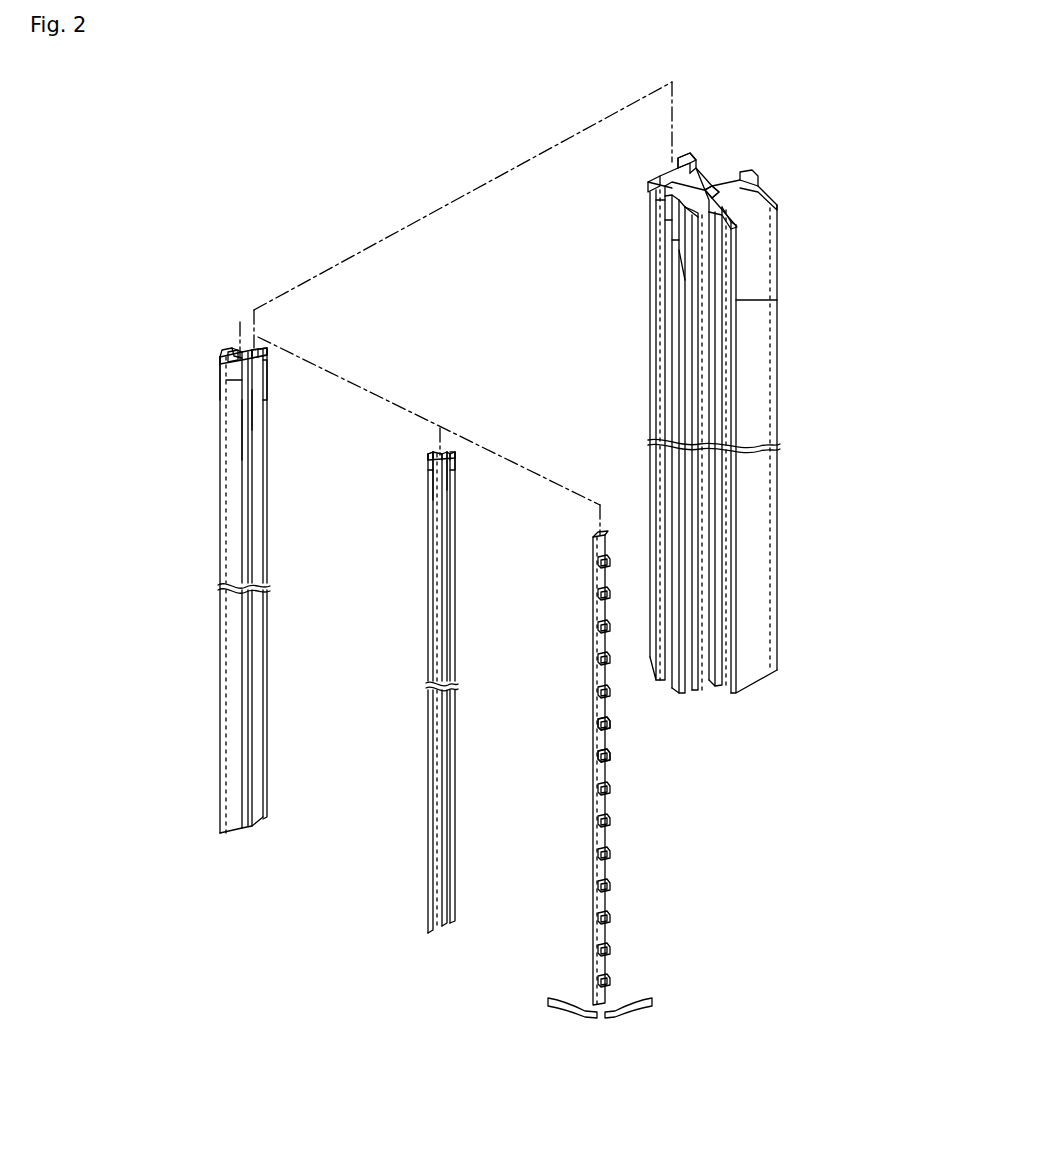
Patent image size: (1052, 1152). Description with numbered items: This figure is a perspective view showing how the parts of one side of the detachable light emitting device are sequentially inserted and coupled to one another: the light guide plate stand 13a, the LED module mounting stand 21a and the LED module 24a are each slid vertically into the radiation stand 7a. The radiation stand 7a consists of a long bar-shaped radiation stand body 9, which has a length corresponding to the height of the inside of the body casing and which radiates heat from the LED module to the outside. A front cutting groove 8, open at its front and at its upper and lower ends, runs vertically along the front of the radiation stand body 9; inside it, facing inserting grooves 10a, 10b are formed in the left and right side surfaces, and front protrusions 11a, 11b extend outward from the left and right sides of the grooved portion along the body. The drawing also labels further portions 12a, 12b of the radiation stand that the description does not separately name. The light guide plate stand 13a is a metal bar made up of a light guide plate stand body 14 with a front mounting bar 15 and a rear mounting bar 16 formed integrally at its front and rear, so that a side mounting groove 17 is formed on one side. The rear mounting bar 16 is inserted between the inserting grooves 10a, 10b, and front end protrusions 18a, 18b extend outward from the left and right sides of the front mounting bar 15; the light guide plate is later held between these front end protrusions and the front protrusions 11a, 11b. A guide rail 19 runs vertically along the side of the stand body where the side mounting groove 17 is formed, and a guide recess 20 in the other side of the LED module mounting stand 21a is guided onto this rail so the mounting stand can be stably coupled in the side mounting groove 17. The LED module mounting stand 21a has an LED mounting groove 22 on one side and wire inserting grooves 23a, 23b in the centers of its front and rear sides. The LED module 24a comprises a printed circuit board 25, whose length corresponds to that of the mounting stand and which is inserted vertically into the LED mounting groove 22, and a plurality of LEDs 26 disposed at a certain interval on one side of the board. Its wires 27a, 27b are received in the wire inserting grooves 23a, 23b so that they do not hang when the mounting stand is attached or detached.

The radiation stand 7a is at (705, 150).
The front cutting groove 8 is at (671, 254).
The radiation stand body 9 is at (703, 192).
The inserting groove 10a is at (660, 207).
The inserting groove 10b is at (690, 215).
The front protrusion 11a is at (667, 226).
The front protrusion 11b is at (683, 268).
The first channel groove 12a is at (684, 160).
The second channel groove 12b is at (760, 335).
The light guide plate stand 13a is at (218, 350).
The light guide plate stand body 14 is at (231, 354).
The front mounting bar 15 is at (231, 387).
The rear mounting bar 16 is at (258, 350).
The side mounting groove 17 is at (258, 398).
The front end protrusion 18a is at (222, 362).
The front end protrusion 18b is at (243, 428).
The guide rail 19 is at (265, 372).
The guide recess 20 is at (431, 452).
The LED module mounting stand 21a is at (412, 819).
The LED mounting groove 22 is at (448, 470).
The wire inserting groove 23a is at (434, 480).
The wire inserting groove 23b is at (455, 451).
The LED module 24a is at (606, 797).
The printed circuit board 25 is at (607, 718).
The LED 26 is at (611, 752).
The wire 27a is at (567, 998).
The wire 27b is at (641, 998).